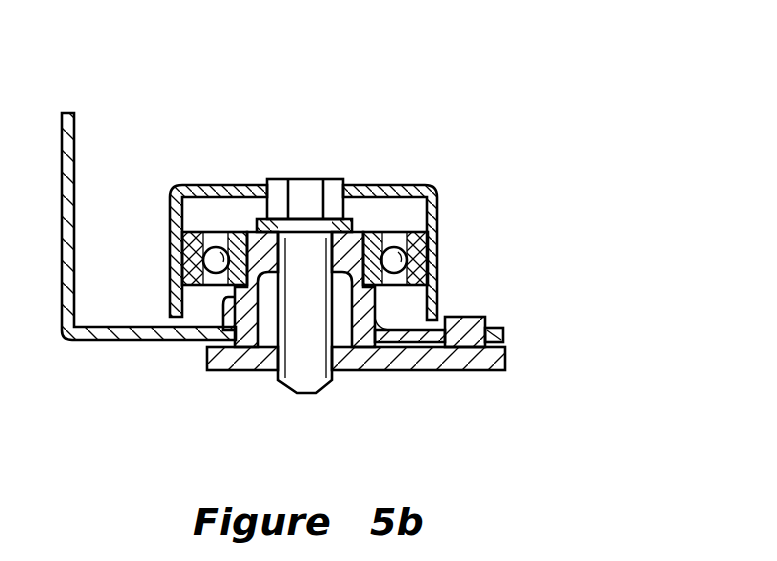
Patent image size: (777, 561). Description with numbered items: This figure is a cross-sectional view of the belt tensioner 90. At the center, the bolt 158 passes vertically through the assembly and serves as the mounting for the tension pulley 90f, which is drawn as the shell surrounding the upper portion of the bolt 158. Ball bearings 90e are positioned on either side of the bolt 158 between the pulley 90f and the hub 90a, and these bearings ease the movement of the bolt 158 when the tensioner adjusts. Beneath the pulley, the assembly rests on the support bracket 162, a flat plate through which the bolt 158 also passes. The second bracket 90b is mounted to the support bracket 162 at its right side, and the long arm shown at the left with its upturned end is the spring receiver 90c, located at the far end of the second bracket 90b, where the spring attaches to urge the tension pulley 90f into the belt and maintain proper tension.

The belt tensioner 90 is at (329, 243).
The hub 90a is at (252, 228).
The second bracket 90b is at (507, 335).
The spring receiver 90c is at (69, 113).
The ball bearings 90e is at (210, 264).
The tension pulley 90f is at (438, 252).
The bolt 158 is at (305, 188).
The support bracket 162 is at (435, 358).